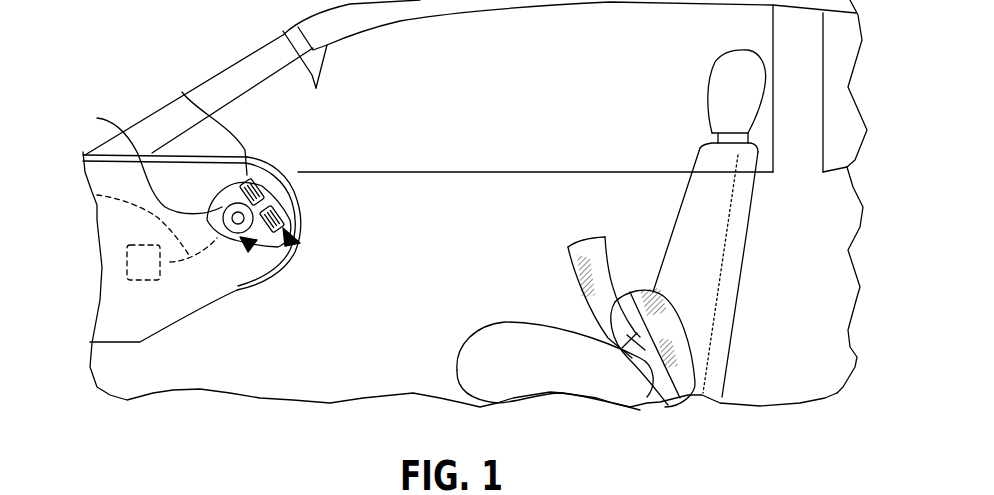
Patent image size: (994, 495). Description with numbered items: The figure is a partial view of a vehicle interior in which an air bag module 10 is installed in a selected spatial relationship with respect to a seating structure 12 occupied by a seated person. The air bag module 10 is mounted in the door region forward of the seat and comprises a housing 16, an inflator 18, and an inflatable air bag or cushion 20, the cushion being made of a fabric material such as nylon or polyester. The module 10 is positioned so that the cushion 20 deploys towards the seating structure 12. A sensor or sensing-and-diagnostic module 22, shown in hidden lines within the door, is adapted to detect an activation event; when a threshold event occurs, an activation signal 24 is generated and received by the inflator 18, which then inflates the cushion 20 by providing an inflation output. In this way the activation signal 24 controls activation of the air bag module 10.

The air bag module 10 is at (290, 235).
The seating structure 12 is at (742, 280).
The housing 16 is at (97, 118).
The inflator 18 is at (253, 246).
The inflatable cushion 20 is at (182, 90).
The sensing-and-diagnostic module 22 is at (133, 280).
The activation signal 24 is at (97, 195).